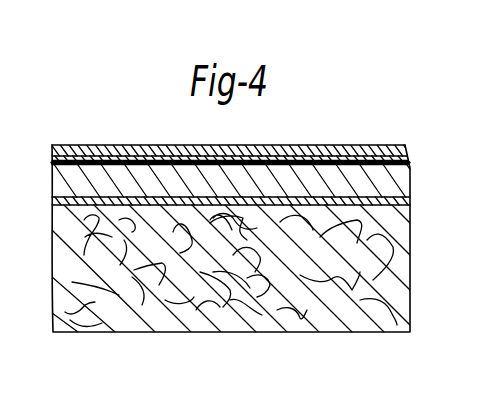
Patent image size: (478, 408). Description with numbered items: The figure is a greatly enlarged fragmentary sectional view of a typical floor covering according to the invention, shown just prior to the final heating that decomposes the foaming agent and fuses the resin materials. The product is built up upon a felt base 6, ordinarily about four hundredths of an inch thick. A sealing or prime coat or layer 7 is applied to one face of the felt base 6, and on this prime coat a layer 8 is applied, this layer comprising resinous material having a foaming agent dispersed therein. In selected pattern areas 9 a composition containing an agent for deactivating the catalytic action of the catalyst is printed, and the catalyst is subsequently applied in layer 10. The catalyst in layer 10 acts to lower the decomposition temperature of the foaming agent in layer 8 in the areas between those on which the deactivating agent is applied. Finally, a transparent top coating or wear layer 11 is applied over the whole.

The felt base 6 is at (78, 257).
The prime coat 7 is at (405, 203).
The foamable resinous layer 8 is at (60, 184).
The deactivating agent pattern areas 9 is at (315, 160).
The catalyst layer 10 is at (402, 158).
The wear layer 11 is at (117, 147).